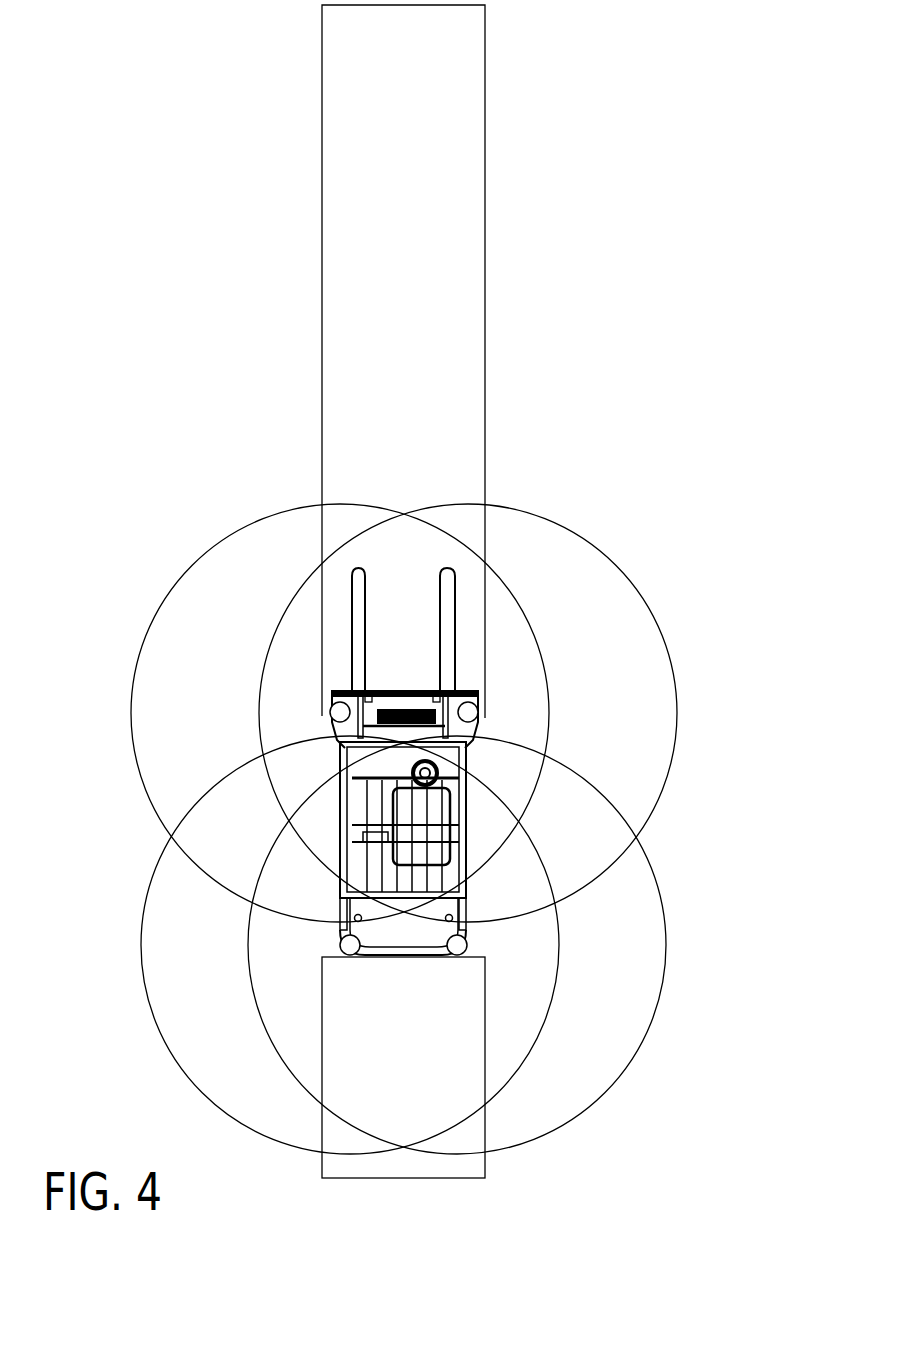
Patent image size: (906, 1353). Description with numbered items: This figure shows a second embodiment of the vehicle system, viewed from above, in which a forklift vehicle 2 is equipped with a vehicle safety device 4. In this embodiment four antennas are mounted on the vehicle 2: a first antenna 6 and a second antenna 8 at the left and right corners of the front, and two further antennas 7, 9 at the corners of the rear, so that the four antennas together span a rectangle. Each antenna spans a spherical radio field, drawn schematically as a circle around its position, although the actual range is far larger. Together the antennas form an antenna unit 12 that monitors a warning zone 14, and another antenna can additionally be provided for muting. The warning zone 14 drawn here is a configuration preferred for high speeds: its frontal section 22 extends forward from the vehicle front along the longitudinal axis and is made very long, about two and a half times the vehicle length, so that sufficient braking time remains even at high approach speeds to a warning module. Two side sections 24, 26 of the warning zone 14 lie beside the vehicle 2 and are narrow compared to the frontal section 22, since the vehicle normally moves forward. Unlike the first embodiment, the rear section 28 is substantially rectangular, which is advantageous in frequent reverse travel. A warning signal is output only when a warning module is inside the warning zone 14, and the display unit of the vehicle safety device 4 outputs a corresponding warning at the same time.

The vehicle 2 is at (424, 966).
The vehicle safety device 4 is at (633, 492).
The first antenna 6 is at (329, 716).
The antenna 7 is at (333, 942).
The second antenna 8 is at (483, 706).
The antenna 9 is at (470, 945).
The antenna unit 12 is at (690, 825).
The warning zone 14 is at (488, 178).
The frontal section 22 is at (341, 78).
The side section 24 is at (177, 895).
The side section 26 is at (660, 908).
The rear section 28 is at (372, 1180).